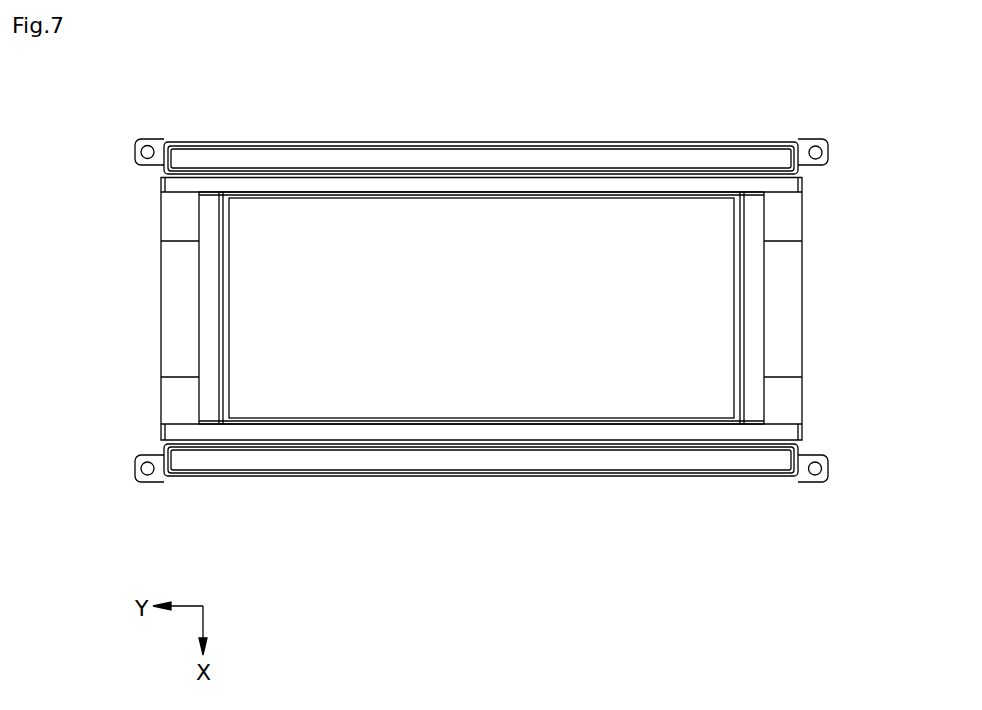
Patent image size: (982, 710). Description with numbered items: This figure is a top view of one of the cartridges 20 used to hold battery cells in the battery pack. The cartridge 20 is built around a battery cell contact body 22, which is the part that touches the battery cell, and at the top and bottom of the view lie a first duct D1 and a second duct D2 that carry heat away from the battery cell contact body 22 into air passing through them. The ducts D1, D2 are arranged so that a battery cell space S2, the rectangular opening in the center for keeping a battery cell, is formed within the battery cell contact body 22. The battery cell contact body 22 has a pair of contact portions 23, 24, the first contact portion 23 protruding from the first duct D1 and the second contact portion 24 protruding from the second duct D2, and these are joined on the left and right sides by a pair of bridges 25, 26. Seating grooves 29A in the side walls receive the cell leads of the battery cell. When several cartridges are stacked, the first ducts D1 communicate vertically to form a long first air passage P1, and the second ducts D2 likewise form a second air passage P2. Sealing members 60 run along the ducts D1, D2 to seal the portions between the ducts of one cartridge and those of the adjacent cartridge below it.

The cartridge 20 is at (803, 138).
The battery cell contact body 22 is at (835, 243).
The first contact portion 23 is at (622, 187).
The second contact portion 24 is at (615, 432).
The bridge 25 is at (173, 396).
The bridge 26 is at (787, 395).
The seating groove 29A is at (173, 303).
The sealing member 60 is at (193, 146).
The first air passage P1 is at (460, 161).
The second air passage P2 is at (446, 459).
The first duct D1 is at (697, 138).
The second duct D2 is at (697, 470).
The battery cell space S2 is at (707, 334).